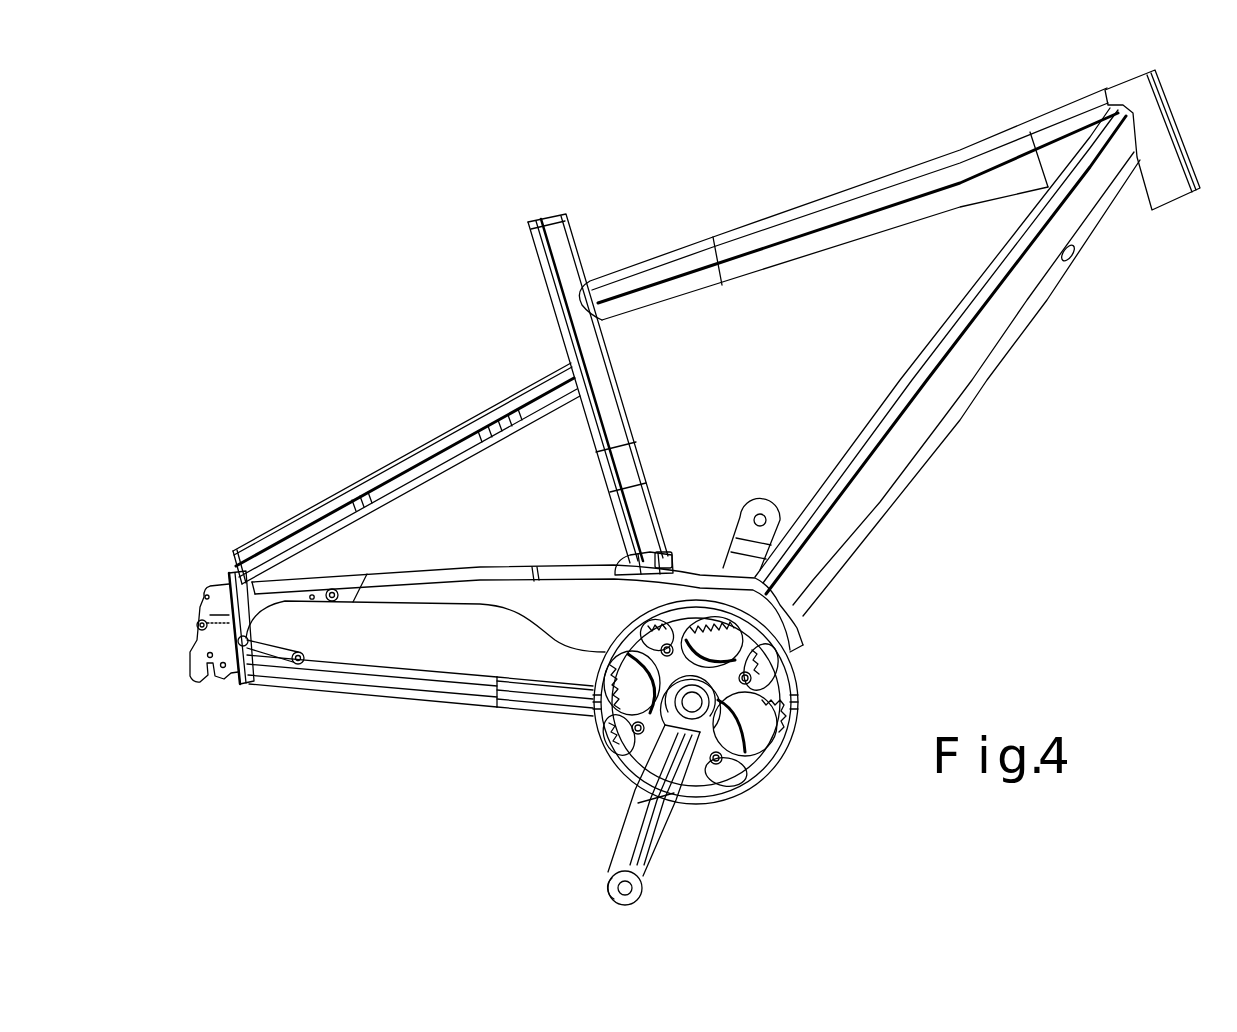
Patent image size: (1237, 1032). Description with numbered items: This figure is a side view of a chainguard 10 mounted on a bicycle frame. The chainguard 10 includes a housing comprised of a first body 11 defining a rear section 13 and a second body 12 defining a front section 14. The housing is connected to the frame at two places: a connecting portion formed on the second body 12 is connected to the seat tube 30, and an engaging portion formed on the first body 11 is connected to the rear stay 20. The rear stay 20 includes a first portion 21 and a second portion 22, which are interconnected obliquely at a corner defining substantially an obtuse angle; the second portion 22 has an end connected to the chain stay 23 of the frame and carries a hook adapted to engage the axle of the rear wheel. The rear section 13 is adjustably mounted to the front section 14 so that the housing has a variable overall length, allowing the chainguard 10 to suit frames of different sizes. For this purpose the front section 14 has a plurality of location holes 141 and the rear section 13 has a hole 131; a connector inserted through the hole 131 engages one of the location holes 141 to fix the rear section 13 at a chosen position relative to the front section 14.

The chainguard 10 is at (360, 640).
The first body 11 is at (318, 626).
The second body 12 is at (417, 632).
The rear section 13 is at (344, 582).
The front section 14 is at (513, 590).
The hole 131 is at (326, 592).
The location holes 141 is at (311, 600).
The rear stay 20 is at (343, 332).
The first portion 21 is at (440, 456).
The second portion 22 is at (185, 694).
The chain stay 23 is at (471, 698).
The seat tube 30 is at (610, 382).